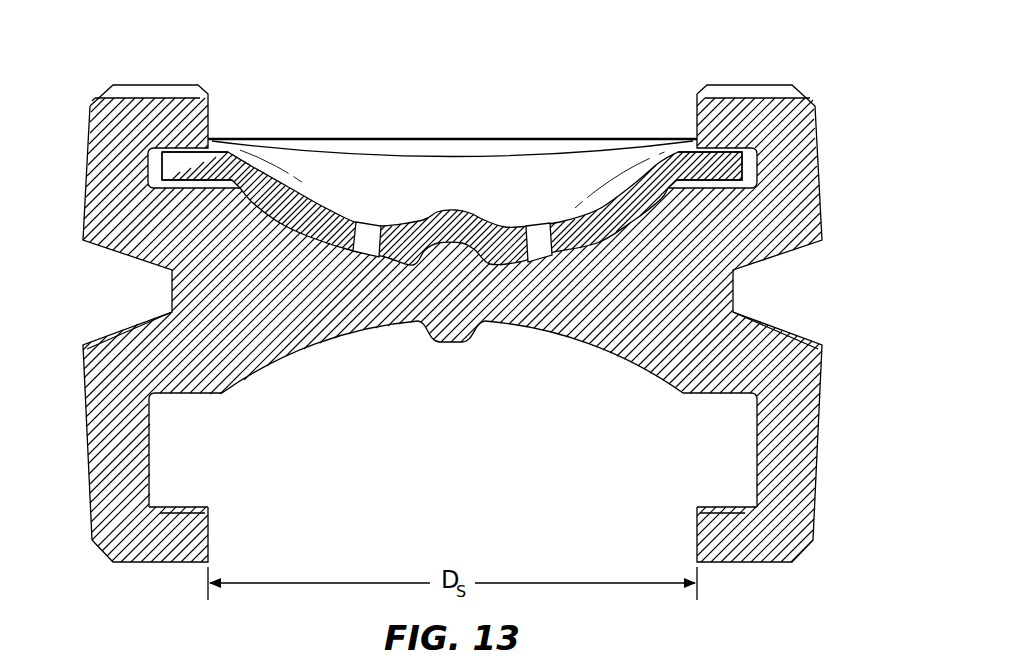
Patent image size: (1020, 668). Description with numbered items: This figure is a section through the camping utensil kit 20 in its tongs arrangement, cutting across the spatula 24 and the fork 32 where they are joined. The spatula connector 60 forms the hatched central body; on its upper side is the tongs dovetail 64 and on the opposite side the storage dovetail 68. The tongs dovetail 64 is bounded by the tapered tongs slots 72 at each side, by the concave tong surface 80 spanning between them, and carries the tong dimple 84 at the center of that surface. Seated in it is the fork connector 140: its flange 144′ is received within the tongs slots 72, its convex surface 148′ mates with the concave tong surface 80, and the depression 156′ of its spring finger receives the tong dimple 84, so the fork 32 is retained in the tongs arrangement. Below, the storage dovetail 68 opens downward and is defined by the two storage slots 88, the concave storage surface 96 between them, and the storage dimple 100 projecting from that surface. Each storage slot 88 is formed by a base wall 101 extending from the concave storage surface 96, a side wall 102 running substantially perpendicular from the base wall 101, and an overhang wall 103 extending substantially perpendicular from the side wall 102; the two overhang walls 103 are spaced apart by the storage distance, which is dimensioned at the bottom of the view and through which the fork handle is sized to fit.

The camping utensil kit 20 is at (838, 322).
The spatula 24 is at (603, 322).
The fork 32 is at (612, 203).
The spatula connector 60 is at (470, 452).
The tongs dovetail 64 is at (717, 123).
The storage dovetail 68 is at (733, 543).
The tongs slots 72 is at (760, 156).
The concave tong surface 80 is at (557, 222).
The tong dimple 84 is at (482, 222).
The storage slots 88 is at (248, 457).
The concave storage surface 96 is at (333, 398).
The storage dimple 100 is at (455, 340).
The base wall 101 is at (697, 396).
The side wall 102 is at (757, 433).
The overhang wall 103 is at (718, 506).
The fork connector 140 is at (356, 186).
The flange 144′ is at (727, 167).
The convex surface 148′ is at (322, 248).
The depression 156′ is at (450, 206).